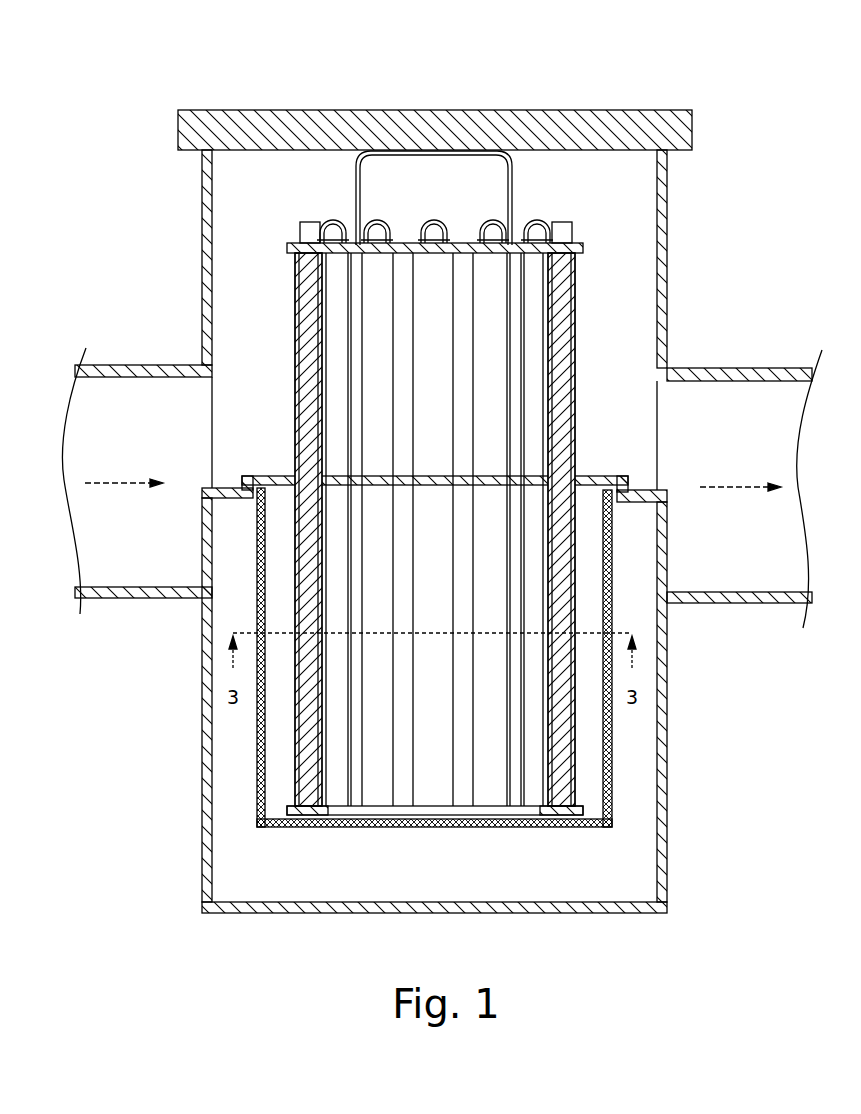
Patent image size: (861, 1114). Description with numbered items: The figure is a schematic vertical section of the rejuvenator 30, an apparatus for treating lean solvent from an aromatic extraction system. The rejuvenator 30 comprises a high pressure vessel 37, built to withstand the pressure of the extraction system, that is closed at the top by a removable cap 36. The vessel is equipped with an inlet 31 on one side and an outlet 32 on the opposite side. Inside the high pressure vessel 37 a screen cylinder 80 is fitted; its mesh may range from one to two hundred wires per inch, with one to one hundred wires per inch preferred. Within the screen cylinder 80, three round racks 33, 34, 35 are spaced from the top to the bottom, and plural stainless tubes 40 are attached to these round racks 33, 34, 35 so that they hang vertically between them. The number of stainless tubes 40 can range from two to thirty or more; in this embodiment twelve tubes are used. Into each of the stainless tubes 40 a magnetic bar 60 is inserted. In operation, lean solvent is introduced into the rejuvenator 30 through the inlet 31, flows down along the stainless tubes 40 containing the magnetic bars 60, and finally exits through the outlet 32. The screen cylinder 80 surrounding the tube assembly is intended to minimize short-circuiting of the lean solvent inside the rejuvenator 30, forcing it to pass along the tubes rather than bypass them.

The rejuvenator 30 is at (442, 465).
The inlet 31 is at (136, 572).
The outlet 32 is at (742, 572).
The round rack 33 is at (583, 253).
The round rack 34 is at (598, 476).
The round rack 35 is at (583, 812).
The removable cap 36 is at (291, 135).
The high pressure vessel 37 is at (668, 188).
The stainless tube 40 is at (437, 497).
The magnetic bar 60 is at (297, 330).
The screen cylinder 80 is at (612, 762).